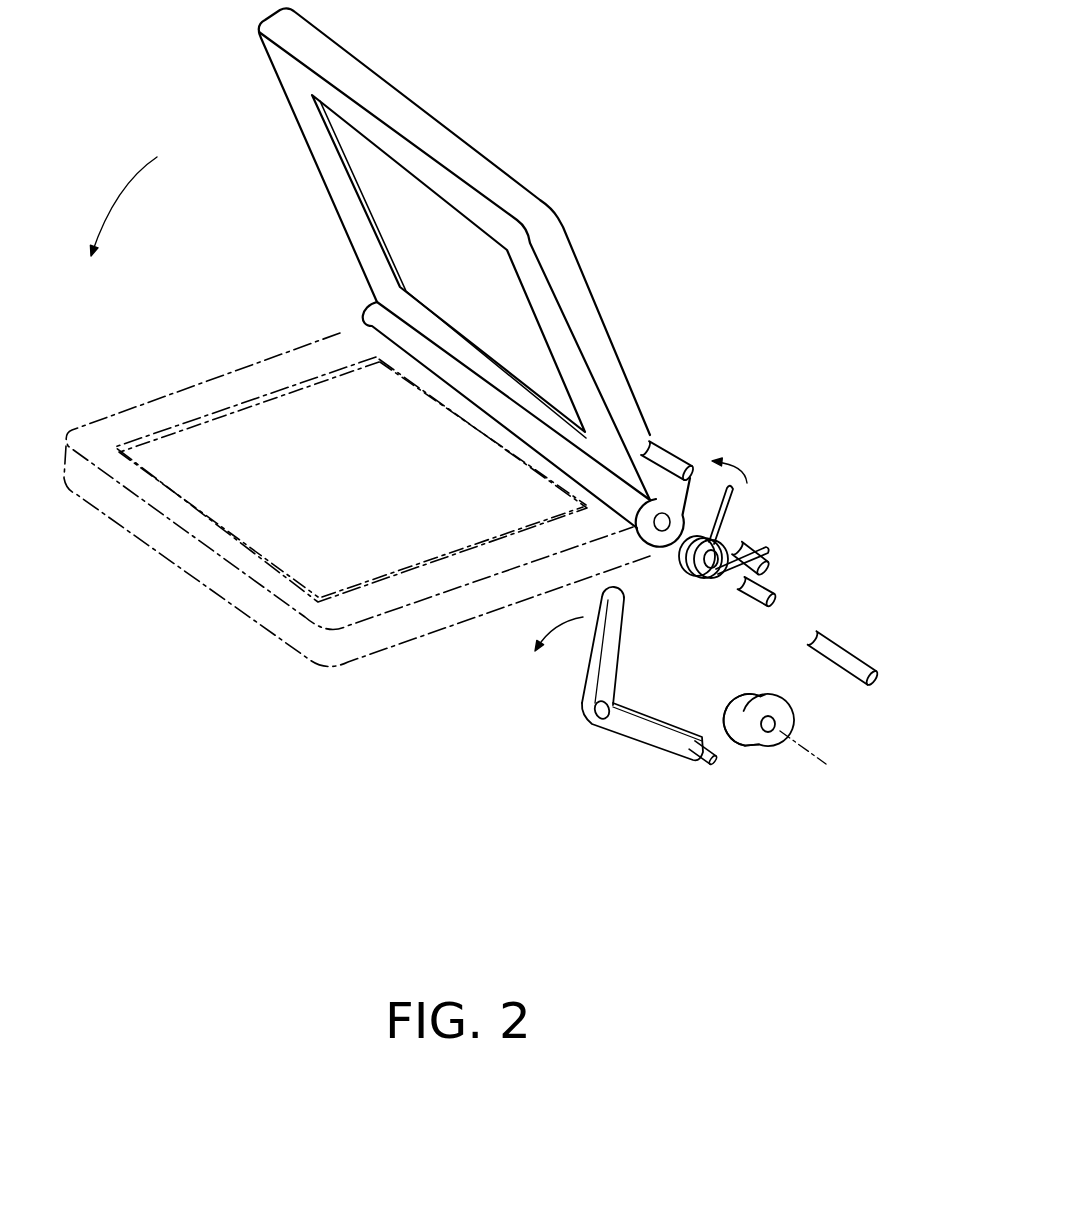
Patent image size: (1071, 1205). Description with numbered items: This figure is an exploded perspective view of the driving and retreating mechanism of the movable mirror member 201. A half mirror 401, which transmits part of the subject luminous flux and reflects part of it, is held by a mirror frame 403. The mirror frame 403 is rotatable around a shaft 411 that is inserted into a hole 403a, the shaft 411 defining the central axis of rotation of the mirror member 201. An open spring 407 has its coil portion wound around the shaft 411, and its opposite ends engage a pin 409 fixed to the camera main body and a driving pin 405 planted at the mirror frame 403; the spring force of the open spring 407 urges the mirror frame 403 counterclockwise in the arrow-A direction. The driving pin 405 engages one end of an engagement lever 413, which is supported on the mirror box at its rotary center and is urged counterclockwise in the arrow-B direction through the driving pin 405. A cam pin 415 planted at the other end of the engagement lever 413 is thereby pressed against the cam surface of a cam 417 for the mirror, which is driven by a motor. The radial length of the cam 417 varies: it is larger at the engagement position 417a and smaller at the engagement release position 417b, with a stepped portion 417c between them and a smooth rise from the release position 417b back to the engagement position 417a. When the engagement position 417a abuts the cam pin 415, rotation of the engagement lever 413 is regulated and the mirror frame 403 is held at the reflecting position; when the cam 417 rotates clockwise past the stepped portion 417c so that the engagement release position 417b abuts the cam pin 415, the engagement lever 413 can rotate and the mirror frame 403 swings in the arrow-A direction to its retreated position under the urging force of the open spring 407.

The mirror member 201 is at (131, 610).
The half mirror 401 is at (277, 528).
The mirror frame 403 is at (486, 326).
The hole 403a is at (658, 530).
The driving pin 405 is at (675, 452).
The open spring 407 is at (768, 550).
The pin 409 is at (777, 567).
The shaft 411 is at (853, 651).
The engagement lever 413 is at (622, 733).
The cam pin 415 is at (697, 772).
The cam for the mirror 417 is at (806, 769).
The engagement position 417a is at (714, 731).
The engagement release position 417b is at (767, 733).
The stepped portion 417c is at (755, 742).